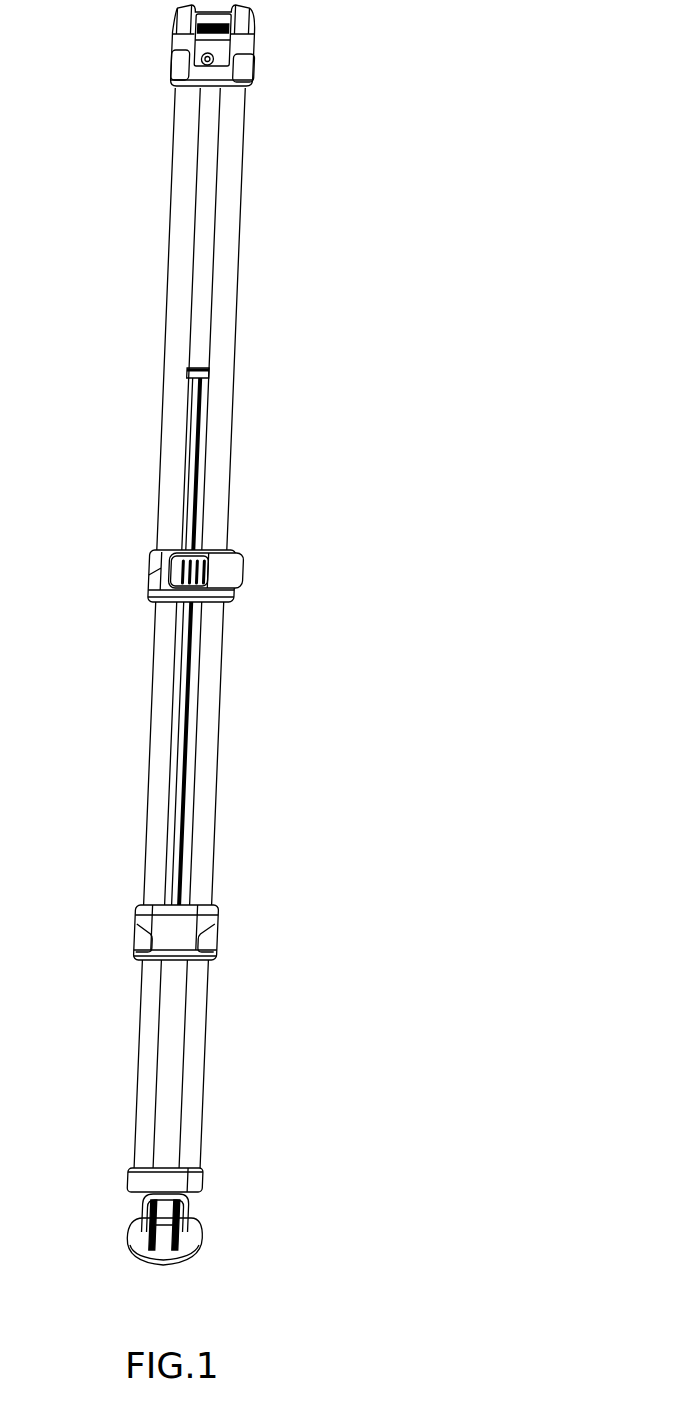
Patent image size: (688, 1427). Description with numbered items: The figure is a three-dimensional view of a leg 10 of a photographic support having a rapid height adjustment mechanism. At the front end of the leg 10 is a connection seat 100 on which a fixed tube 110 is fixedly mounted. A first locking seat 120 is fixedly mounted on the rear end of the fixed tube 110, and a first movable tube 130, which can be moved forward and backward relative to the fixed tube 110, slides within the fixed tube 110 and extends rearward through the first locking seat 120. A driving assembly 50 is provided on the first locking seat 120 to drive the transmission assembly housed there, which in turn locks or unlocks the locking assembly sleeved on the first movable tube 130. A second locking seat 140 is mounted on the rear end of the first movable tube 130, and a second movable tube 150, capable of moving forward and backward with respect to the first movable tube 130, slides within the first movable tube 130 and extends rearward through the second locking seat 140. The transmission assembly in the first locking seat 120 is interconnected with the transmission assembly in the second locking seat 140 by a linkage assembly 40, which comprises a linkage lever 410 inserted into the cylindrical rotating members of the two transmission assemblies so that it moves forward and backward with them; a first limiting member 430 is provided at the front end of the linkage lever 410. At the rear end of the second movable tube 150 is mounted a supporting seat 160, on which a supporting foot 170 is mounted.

The leg 10 is at (270, 352).
The connection seat 100 is at (248, 68).
The fixed tube 110 is at (218, 470).
The first limiting member 430 is at (188, 378).
The linkage lever 410 is at (187, 720).
The linkage assembly 40 is at (188, 833).
The first locking seat 120 is at (232, 597).
The driving assembly 50 is at (230, 563).
The first movable tube 130 is at (192, 752).
The second locking seat 140 is at (203, 922).
The second movable tube 150 is at (197, 1045).
The supporting seat 160 is at (193, 1183).
The supporting foot 170 is at (188, 1240).